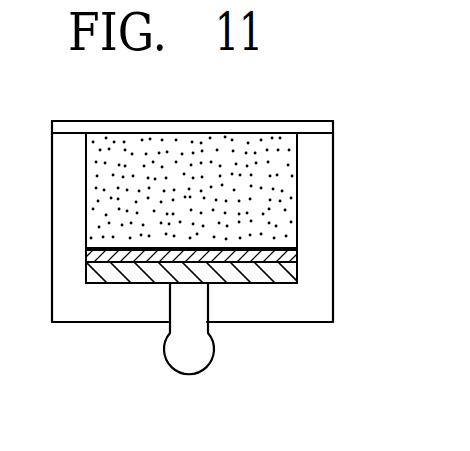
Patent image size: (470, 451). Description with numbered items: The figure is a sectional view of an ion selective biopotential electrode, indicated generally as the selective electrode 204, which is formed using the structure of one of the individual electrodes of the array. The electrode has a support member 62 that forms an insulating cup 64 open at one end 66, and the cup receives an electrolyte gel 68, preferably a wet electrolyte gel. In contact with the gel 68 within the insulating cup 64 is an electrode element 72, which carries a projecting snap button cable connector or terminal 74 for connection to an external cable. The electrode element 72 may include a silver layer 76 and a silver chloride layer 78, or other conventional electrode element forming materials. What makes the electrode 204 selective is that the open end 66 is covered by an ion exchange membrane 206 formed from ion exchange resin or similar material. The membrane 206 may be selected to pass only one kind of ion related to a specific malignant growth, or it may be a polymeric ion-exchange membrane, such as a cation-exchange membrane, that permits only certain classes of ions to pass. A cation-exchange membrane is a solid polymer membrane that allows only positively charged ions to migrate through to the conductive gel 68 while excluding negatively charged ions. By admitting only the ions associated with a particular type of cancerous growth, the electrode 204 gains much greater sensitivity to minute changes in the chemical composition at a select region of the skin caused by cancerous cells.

The support member 62 is at (315, 310).
The insulating cup 64 is at (290, 205).
The open end 66 is at (230, 148).
The electrolyte gel 68 is at (111, 141).
The electrode element 72 is at (85, 270).
The snap button cable connector or terminal 74 is at (196, 352).
The silver layer 76 is at (131, 284).
The silver chloride layer 78 is at (268, 284).
The selective electrode 204 is at (97, 366).
The ion exchange membrane 206 is at (170, 128).